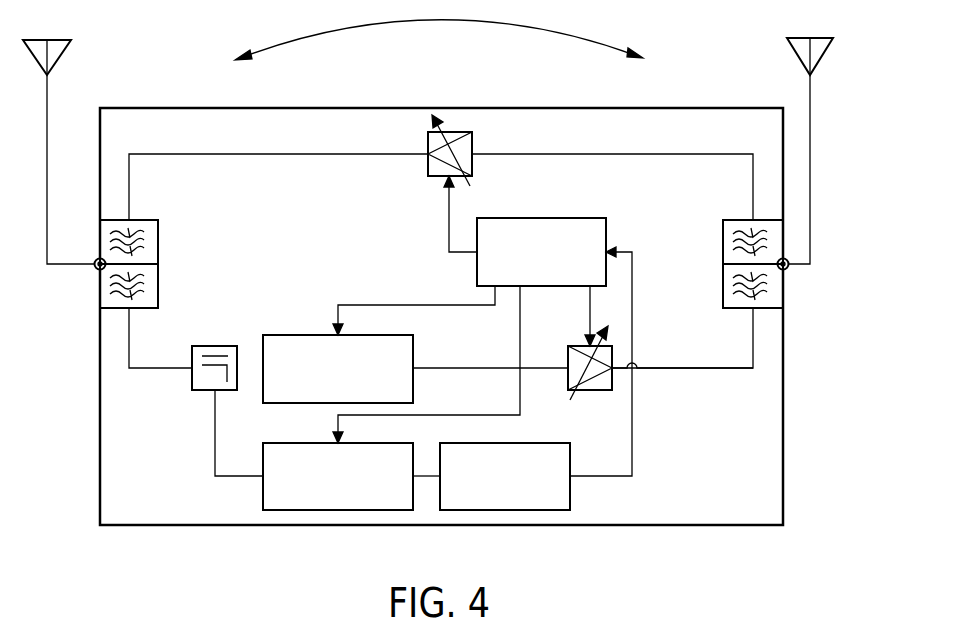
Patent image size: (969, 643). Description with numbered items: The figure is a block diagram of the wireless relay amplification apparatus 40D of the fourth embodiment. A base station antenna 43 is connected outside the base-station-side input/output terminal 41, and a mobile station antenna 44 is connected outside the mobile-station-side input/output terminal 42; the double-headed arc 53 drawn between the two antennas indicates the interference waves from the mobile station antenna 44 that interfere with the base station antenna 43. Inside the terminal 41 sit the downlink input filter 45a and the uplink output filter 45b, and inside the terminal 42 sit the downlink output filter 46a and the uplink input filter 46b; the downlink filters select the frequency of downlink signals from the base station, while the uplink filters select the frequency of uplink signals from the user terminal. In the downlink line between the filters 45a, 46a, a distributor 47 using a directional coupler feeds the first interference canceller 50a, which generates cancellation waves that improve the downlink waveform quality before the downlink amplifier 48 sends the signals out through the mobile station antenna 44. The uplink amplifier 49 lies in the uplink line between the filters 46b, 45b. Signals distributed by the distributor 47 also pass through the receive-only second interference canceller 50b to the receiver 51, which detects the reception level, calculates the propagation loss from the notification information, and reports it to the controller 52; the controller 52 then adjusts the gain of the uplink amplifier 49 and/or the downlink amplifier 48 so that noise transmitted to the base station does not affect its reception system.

The wireless relay amplification apparatus 40D is at (783, 440).
The base-station-side input/output terminal 41 is at (95, 268).
The mobile-station-side input/output terminal 42 is at (788, 268).
The base station antenna 43 is at (71, 55).
The mobile station antenna 44 is at (787, 55).
The downlink input filter 45a is at (158, 286).
The uplink output filter 45b is at (158, 240).
The downlink output filter 46a is at (723, 286).
The uplink input filter 46b is at (723, 240).
The distributor 47 is at (197, 390).
The downlink amplifier 48 is at (590, 390).
The uplink amplifier 49 is at (472, 132).
The first interference canceller 50a is at (305, 335).
The second interference canceller 50b is at (300, 510).
The receiver 51 is at (512, 510).
The controller 52 is at (535, 218).
The antenna coupling 53 is at (440, 22).